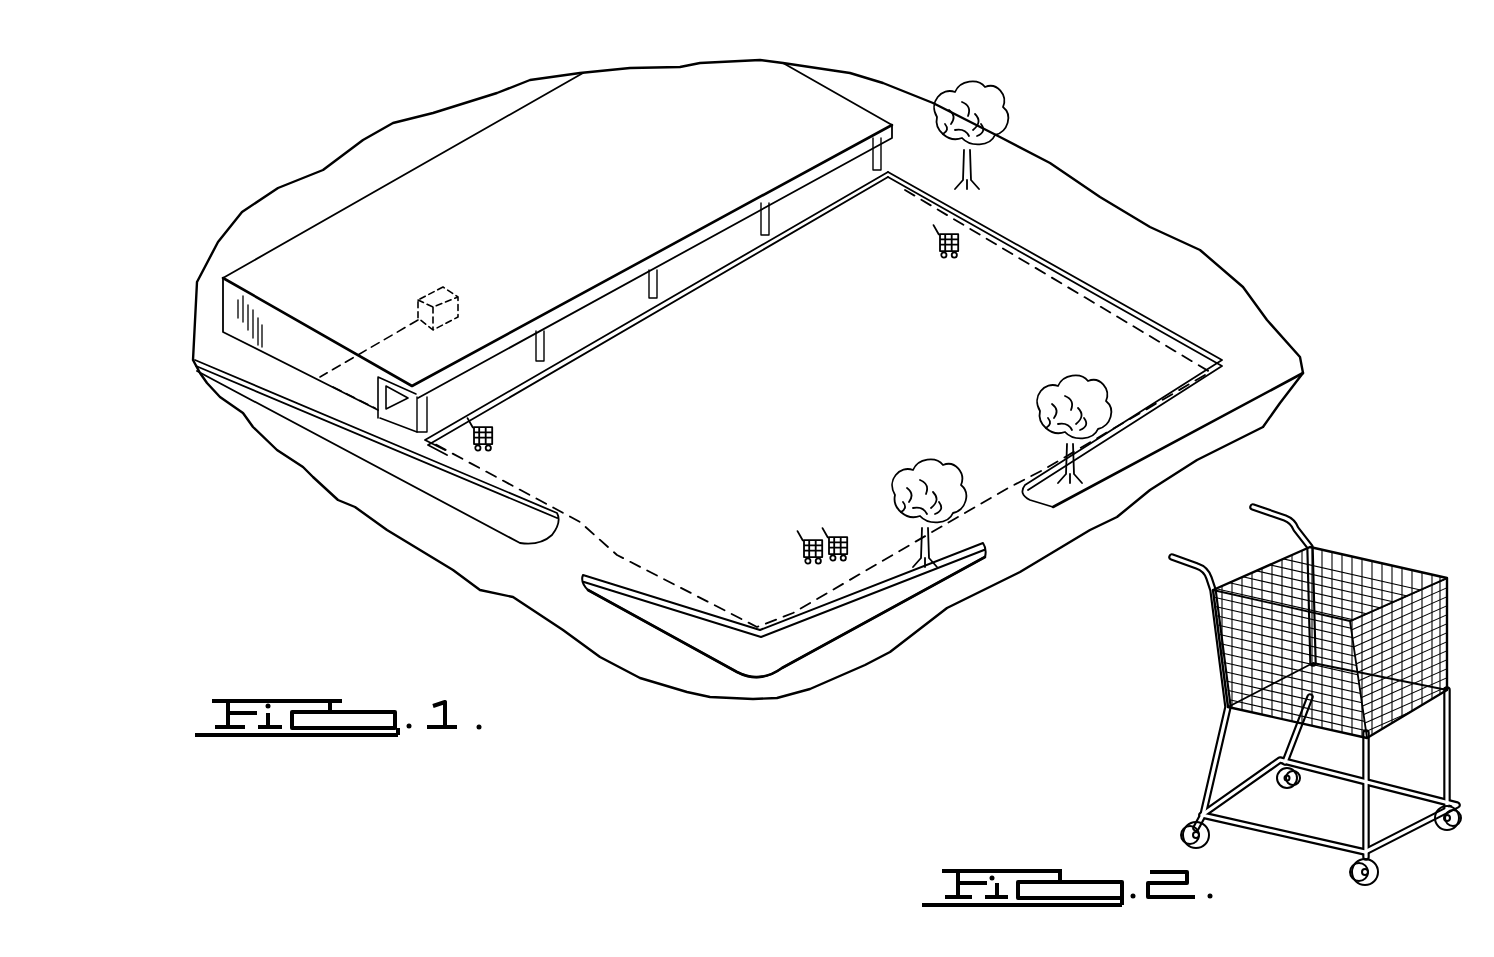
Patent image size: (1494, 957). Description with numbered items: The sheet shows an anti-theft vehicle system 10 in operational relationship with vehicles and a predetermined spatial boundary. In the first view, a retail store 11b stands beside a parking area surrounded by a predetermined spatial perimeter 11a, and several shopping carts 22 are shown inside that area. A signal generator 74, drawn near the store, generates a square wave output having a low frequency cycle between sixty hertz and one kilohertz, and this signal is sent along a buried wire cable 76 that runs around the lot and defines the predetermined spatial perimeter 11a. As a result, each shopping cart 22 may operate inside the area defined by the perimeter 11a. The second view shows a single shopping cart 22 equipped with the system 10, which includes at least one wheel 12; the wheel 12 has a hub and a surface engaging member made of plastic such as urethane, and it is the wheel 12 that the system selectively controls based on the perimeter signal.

In FIG. 1, the anti-theft vehicle system 10 is at (1032, 228).
In FIG. 2, the anti-theft vehicle system 10 is at (1172, 817).
In FIG. 1, the predetermined spatial perimeter 11a is at (812, 369).
In FIG. 1, the retail store 11b is at (374, 228).
In FIG. 2, the wheel 12 is at (1182, 840).
In FIG. 1, the shopping cart 22 is at (946, 255).
In FIG. 2, the shopping cart 22 is at (1220, 684).
In FIG. 1, the signal generator 74 is at (455, 279).
In FIG. 1, the buried wire cable 76 is at (587, 517).